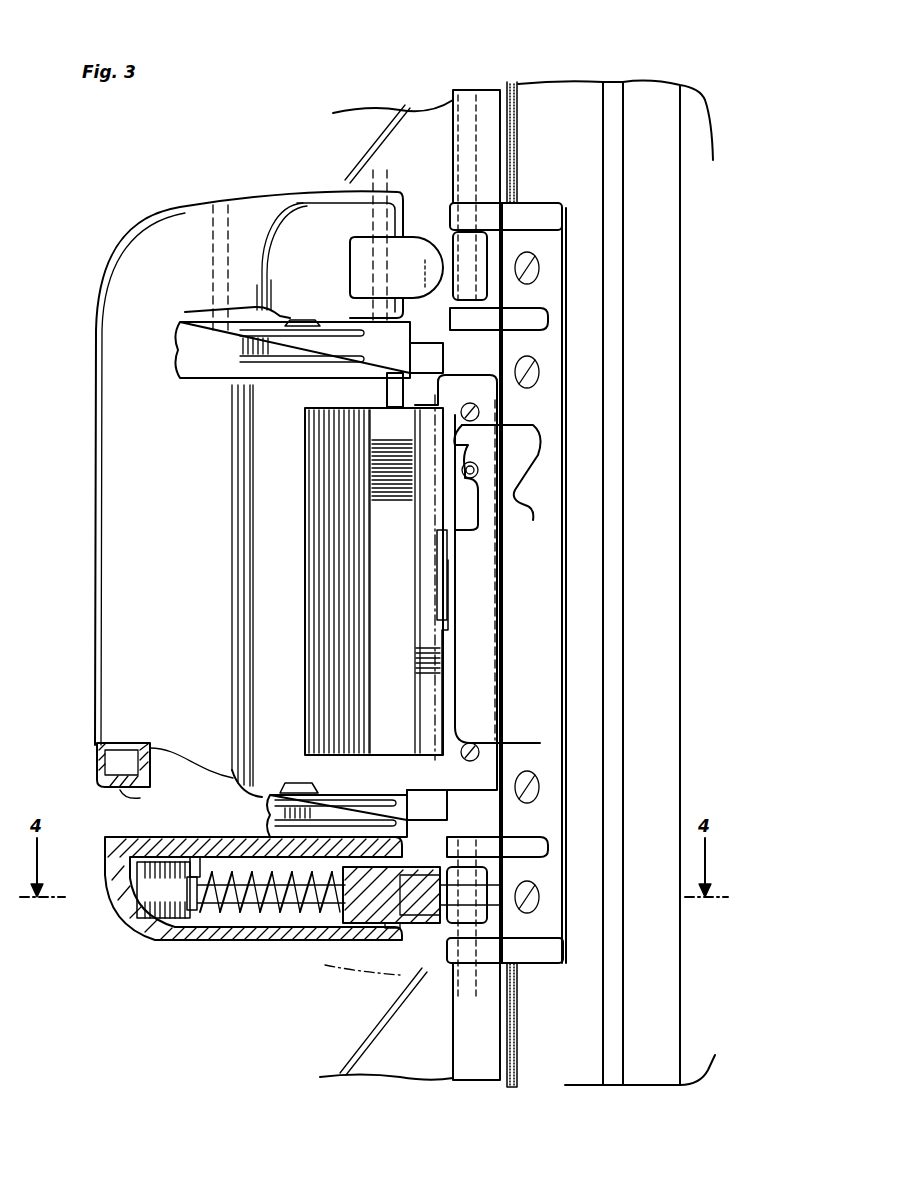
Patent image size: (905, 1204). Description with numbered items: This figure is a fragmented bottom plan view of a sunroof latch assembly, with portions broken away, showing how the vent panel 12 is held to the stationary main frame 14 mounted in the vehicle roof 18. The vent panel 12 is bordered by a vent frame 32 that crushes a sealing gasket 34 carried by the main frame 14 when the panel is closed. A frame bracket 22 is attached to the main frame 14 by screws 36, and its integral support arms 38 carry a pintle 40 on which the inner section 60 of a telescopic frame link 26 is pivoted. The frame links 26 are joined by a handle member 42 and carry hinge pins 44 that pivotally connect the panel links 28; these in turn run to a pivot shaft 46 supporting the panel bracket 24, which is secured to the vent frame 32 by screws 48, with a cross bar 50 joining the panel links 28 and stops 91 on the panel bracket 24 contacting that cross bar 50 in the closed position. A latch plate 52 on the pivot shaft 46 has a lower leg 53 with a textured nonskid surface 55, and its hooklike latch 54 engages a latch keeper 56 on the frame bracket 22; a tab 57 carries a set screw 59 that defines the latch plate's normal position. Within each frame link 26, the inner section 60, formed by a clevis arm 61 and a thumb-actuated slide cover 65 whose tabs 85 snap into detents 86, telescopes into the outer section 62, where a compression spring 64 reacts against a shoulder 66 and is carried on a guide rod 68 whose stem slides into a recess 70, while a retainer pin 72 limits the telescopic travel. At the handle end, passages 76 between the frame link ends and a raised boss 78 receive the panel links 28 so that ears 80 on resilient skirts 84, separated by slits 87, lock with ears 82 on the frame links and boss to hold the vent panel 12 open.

The vent panel 12 is at (385, 1075).
The main frame 14 is at (585, 1078).
The roof 18 is at (640, 88).
The frame bracket 22 is at (555, 780).
The panel bracket 24 is at (485, 395).
The frame links 26 is at (300, 242).
The panel links 28 is at (245, 345).
The vent frame 32 is at (478, 1080).
The sealing gasket 34 is at (510, 1087).
The screws 36 is at (535, 375).
The support arms 38 is at (515, 215).
The pintle 40 is at (465, 232).
The handle member 42 is at (95, 505).
The hinge pins 44 is at (215, 225).
The pivot shaft 46 is at (430, 605).
The screws 48 is at (485, 763).
The cross bar 50 is at (388, 382).
The latch plate 52 is at (300, 667).
The lower leg 53 is at (373, 495).
The latch 54 is at (448, 548).
The textured nonskid surface 55 is at (340, 577).
The latch keeper 56 is at (450, 590).
The tab 57 is at (480, 485).
The set screw 59 is at (480, 470).
The inner section 60 is at (410, 237).
The clevis arm 61 is at (350, 922).
The outer section 62 is at (335, 190).
The compression spring 64 is at (195, 938).
The slide cover 65 is at (423, 283).
The shoulder 66 is at (197, 865).
The guide rod 68 is at (280, 922).
The recess 70 is at (148, 905).
The retainer pin 72 is at (380, 200).
The passages 76 is at (105, 803).
The raised boss 78 is at (113, 745).
The ears 80 is at (292, 332).
The ears 82 is at (135, 800).
The resilient skirts 84 is at (333, 345).
The tabs 85 is at (433, 868).
The detents 86 is at (445, 895).
The slits 87 is at (278, 325).
The stops 91 is at (445, 358).